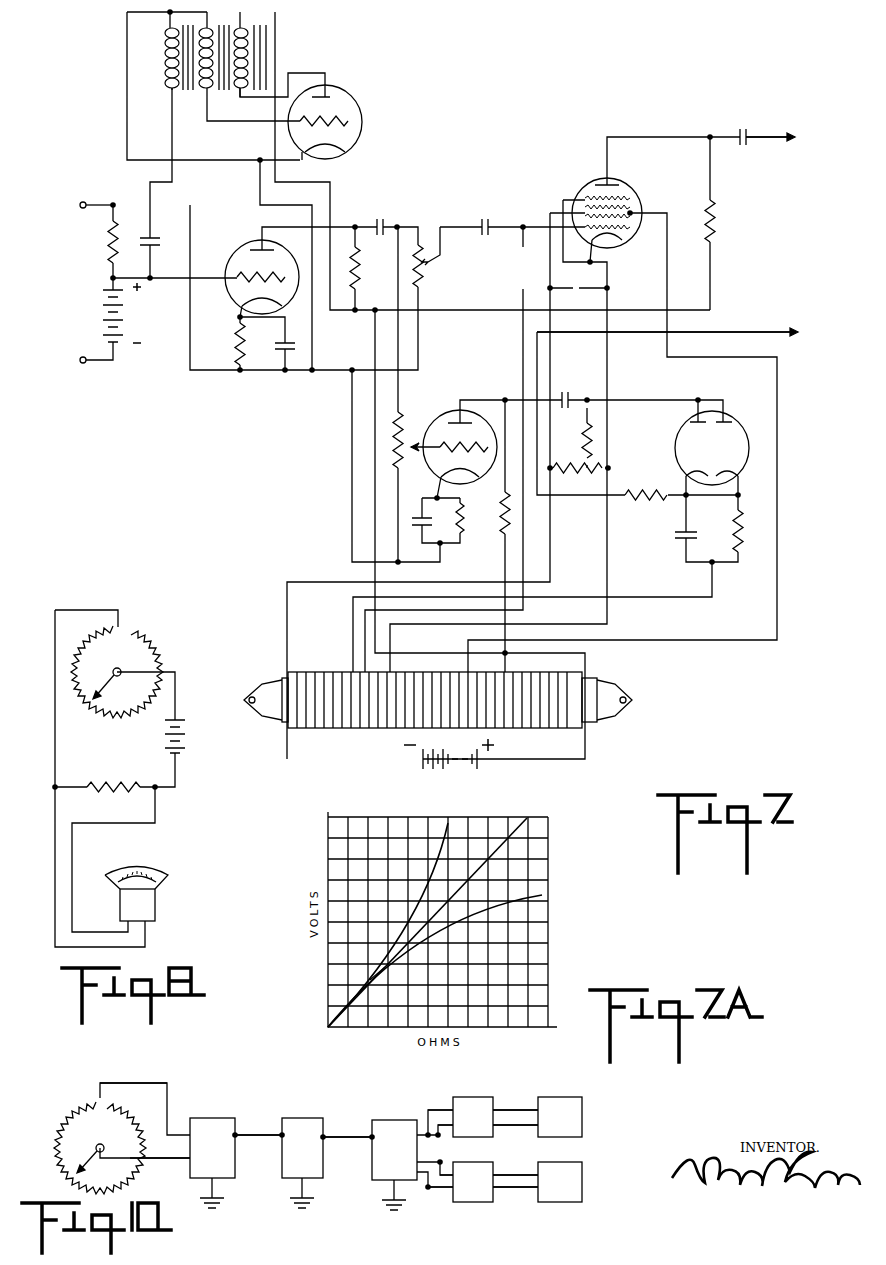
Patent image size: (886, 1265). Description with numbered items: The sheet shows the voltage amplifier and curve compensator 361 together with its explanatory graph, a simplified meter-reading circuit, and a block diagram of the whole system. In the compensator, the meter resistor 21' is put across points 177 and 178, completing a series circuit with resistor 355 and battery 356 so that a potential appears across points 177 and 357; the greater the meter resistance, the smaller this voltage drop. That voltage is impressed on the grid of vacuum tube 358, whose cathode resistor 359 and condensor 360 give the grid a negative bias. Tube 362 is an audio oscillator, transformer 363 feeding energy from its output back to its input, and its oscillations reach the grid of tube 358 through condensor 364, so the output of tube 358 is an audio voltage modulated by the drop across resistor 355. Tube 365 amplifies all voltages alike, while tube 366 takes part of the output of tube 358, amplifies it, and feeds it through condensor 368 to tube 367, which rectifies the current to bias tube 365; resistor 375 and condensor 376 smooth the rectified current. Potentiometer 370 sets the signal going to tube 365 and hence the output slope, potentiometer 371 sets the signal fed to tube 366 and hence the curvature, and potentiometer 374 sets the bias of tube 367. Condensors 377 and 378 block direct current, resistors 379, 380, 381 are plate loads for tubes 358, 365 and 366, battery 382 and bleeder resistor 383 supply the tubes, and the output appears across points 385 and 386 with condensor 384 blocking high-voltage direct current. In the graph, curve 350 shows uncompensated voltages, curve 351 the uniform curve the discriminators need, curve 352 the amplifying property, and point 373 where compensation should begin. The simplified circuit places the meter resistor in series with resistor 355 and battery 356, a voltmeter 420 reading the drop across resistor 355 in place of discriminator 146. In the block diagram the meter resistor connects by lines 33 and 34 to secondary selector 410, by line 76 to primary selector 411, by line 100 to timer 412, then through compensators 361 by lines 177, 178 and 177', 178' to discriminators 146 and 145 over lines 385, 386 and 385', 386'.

In FIG. 7, the transformer 363 is at (270, 37).
In FIG. 7, the tube 362 is at (362, 100).
In FIG. 7, the condensor 364 is at (125, 243).
In FIG. 7, the point 177 is at (81, 205).
In FIG. 10, the point 177 is at (417, 1095).
In FIG. 7, the resistor 355 is at (103, 238).
In FIG. 8, the resistor 355 is at (122, 793).
In FIG. 7, the point 357 is at (113, 278).
In FIG. 7, the battery 356 is at (103, 318).
In FIG. 8, the battery 356 is at (192, 748).
In FIG. 7, the point 178 is at (68, 360).
In FIG. 10, the point 178 is at (417, 1110).
In FIG. 7, the vacuum tube 358 is at (231, 302).
In FIG. 7, the resistor 359 is at (234, 340).
In FIG. 7, the condensor 360 is at (297, 352).
In FIG. 7, the resistor 379 is at (348, 270).
In FIG. 7, the condensor 377 is at (375, 218).
In FIG. 7, the potentiometer 370 is at (427, 262).
In FIG. 7, the condensor 378 is at (483, 217).
In FIG. 7, the tube 365 is at (587, 180).
In FIG. 7, the resistor 380 is at (700, 226).
In FIG. 7, the condensor 384 is at (735, 115).
In FIG. 7, the point 385 is at (788, 137).
In FIG. 10, the point 385 is at (515, 1102).
In FIG. 7, the point 386 is at (684, 332).
In FIG. 10, the point 386 is at (515, 1132).
In FIG. 7, the condensor 368 is at (577, 393).
In FIG. 7, the tube 367 is at (748, 462).
In FIG. 7, the resistor 375 is at (748, 522).
In FIG. 7, the condensor 376 is at (698, 538).
In FIG. 7, the potentiometer 371 is at (392, 425).
In FIG. 7, the tube 366 is at (430, 466).
In FIG. 7, the resistor 381 is at (497, 524).
In FIG. 7, the potentiometer 374 is at (580, 473).
In FIG. 7, the bleeder resistor 383 is at (258, 700).
In FIG. 7, the battery 382 is at (455, 768).
In FIG. 7, the voltage amplifier and curve compensator 361 is at (721, 752).
In FIG. 10, the voltage amplifier and curve compensator 361 is at (473, 1149).
In FIG. 7A, the curve 352 is at (453, 832).
In FIG. 7A, the curve 351 is at (503, 848).
In FIG. 7A, the curve 350 is at (498, 906).
In FIG. 7A, the point 373 is at (376, 977).
In FIG. 8, the discriminator 146 is at (88, 602).
In FIG. 10, the discriminator 146 is at (560, 1117).
In FIG. 8, the resistor 21' is at (126, 665).
In FIG. 10, the resistor 21' is at (106, 1153).
In FIG. 8, the voltmeter 420 is at (155, 913).
In FIG. 10, the line 33 is at (130, 1083).
In FIG. 10, the line 34 is at (163, 1158).
In FIG. 10, the secondary selector 410 is at (212, 1163).
In FIG. 10, the primary selector 411 is at (302, 1163).
In FIG. 10, the timer 412 is at (394, 1165).
In FIG. 10, the line 76 is at (258, 1130).
In FIG. 10, the line 100 is at (345, 1133).
In FIG. 10, the line 177' is at (432, 1191).
In FIG. 10, the line 178' is at (433, 1201).
In FIG. 10, the line 385' is at (515, 1167).
In FIG. 10, the line 386' is at (515, 1195).
In FIG. 10, the discriminator 145 is at (560, 1182).